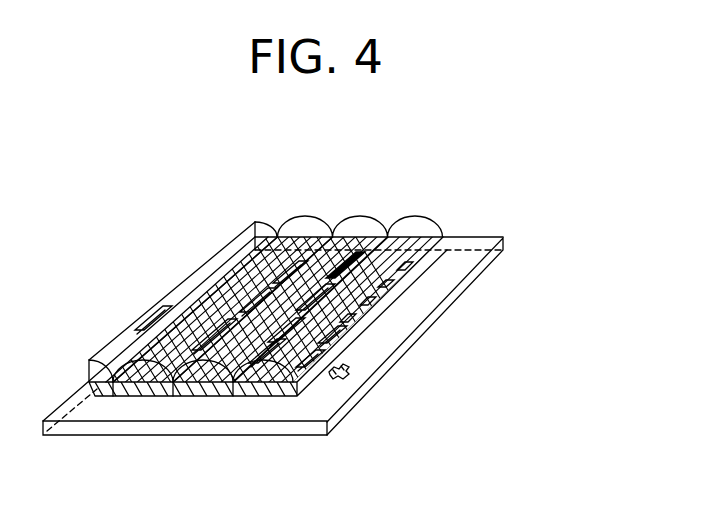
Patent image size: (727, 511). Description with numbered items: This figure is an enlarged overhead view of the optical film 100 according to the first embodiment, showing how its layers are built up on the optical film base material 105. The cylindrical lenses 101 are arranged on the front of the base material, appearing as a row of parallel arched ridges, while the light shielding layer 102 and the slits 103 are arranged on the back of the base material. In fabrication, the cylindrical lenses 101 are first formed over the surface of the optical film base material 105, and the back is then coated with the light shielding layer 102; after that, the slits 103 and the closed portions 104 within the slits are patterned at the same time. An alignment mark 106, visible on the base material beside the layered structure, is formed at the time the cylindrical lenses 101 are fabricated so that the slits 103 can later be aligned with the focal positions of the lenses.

The optical film 100 is at (150, 268).
The cylindrical lenses 101 is at (310, 216).
The light shielding layer 102 is at (297, 388).
The slits 103 is at (243, 388).
The closed portions 104 is at (355, 253).
The optical film base material 105 is at (503, 237).
The alignment mark 106 is at (343, 360).